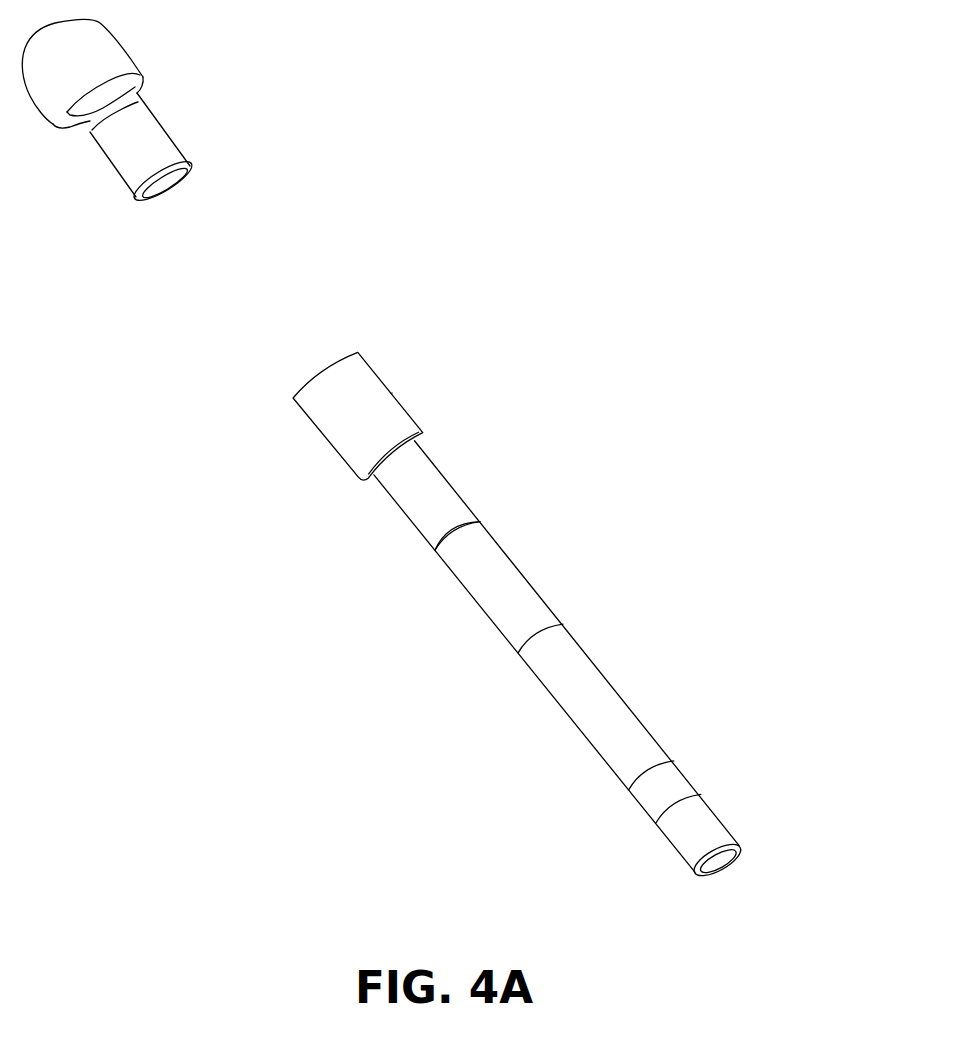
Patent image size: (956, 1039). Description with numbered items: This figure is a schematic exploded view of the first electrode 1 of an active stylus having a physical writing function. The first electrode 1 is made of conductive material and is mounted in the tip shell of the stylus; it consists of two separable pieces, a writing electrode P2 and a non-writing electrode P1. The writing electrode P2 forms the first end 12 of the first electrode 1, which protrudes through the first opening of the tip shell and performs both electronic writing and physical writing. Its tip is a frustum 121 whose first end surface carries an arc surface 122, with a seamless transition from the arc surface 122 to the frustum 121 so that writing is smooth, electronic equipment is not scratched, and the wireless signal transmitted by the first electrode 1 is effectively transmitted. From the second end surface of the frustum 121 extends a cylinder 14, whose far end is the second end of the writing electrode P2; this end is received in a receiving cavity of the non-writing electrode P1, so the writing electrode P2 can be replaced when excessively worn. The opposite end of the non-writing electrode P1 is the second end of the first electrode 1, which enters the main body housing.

The first electrode 1 is at (450, 448).
The first end 12 is at (168, 64).
The frustum 121 is at (105, 60).
The arc surface 122 is at (60, 37).
The cylinder 14 is at (186, 150).
The non-writing electrode P1 is at (584, 621).
The writing electrode P2 is at (227, 103).